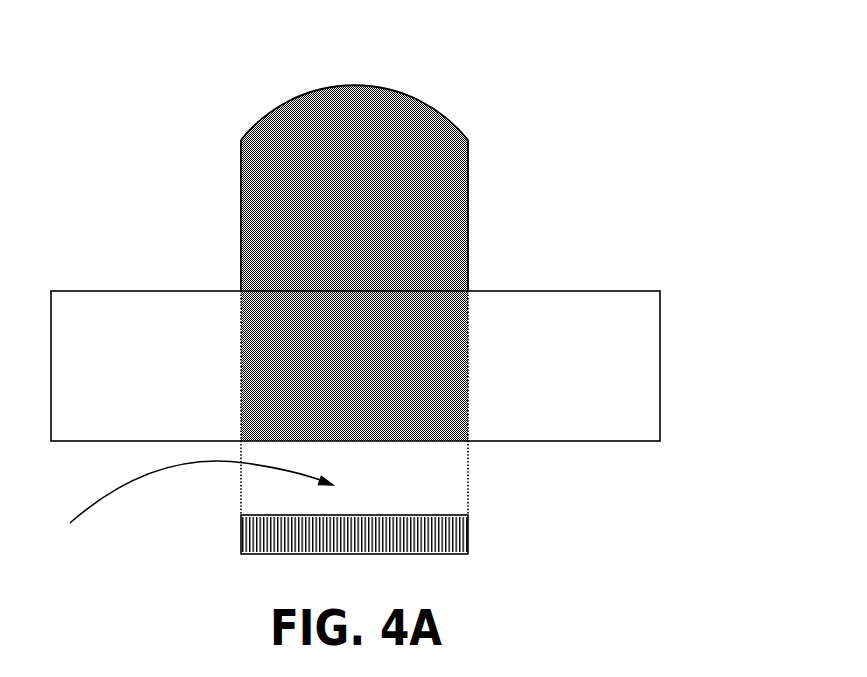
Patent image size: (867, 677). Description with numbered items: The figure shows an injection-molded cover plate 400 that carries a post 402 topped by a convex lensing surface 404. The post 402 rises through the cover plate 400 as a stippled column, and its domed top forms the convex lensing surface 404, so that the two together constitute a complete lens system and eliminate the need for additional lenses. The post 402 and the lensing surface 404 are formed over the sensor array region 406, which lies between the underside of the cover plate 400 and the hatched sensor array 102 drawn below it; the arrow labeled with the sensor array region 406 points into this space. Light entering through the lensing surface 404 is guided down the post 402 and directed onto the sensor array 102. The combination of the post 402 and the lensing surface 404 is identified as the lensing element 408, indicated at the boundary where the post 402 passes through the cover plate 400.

The injection-molded cover plate 400 is at (661, 375).
The post 402 is at (470, 223).
The convex lensing surface 404 is at (448, 120).
The sensor array region 406 is at (172, 504).
The lensing element 408 is at (462, 337).
The sensor array 102 is at (469, 535).